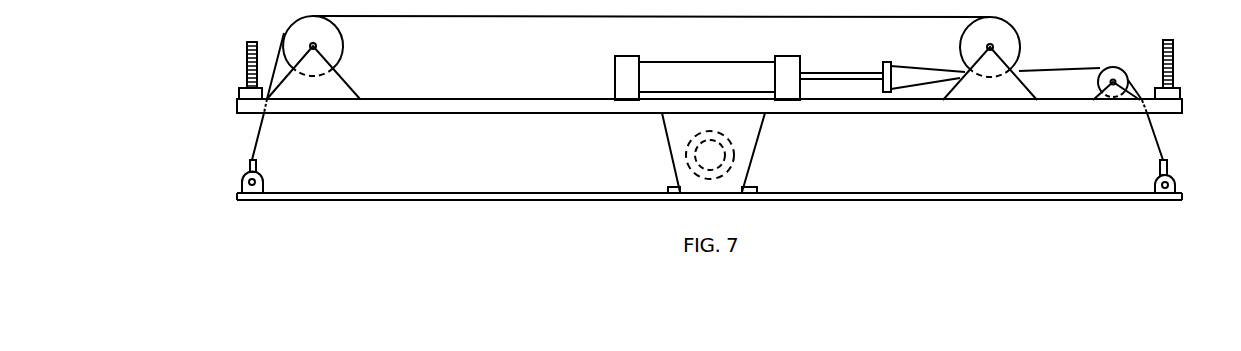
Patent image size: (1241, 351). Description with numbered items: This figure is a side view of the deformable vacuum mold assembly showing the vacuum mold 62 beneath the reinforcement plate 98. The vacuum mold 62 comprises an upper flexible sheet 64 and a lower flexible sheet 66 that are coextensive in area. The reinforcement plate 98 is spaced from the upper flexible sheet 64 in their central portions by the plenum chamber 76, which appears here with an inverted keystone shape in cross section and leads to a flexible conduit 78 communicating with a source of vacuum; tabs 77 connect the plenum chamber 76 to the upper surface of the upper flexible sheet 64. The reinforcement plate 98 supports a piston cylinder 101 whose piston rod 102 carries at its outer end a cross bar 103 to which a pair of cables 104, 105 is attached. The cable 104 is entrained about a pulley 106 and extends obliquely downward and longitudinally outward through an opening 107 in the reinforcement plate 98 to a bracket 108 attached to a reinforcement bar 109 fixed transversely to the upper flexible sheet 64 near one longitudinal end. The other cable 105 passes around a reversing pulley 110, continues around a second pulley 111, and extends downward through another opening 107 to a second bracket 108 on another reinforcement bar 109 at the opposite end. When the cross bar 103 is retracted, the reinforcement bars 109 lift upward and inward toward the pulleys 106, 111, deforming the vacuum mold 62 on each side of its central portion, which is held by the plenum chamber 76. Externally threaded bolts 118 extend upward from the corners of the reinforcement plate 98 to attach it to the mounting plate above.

The vacuum mold 62 is at (709, 200).
The upper flexible sheet 64 is at (430, 192).
The lower flexible sheet 66 is at (505, 201).
The plenum chamber 76 is at (752, 158).
The tabs 77 is at (757, 188).
The flexible conduit 78 is at (672, 165).
The reinforcement plate 98 is at (504, 99).
The piston cylinder 101 is at (695, 70).
The piston rod 102 is at (828, 73).
The cross bar 103 is at (903, 41).
The cable 104 is at (1062, 70).
The cable 105 is at (403, 16).
The pulley 106 is at (1118, 65).
The opening 107 is at (1150, 118).
The bracket 108 is at (248, 165).
The reinforcement bar 109 is at (240, 181).
The reversing pulley 110 is at (1016, 36).
The second pulley 111 is at (290, 30).
The externally threaded bolts 118 is at (245, 63).